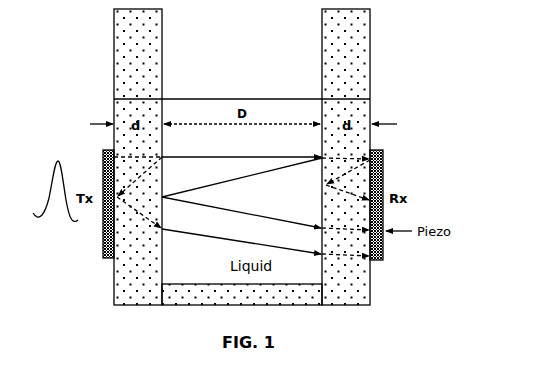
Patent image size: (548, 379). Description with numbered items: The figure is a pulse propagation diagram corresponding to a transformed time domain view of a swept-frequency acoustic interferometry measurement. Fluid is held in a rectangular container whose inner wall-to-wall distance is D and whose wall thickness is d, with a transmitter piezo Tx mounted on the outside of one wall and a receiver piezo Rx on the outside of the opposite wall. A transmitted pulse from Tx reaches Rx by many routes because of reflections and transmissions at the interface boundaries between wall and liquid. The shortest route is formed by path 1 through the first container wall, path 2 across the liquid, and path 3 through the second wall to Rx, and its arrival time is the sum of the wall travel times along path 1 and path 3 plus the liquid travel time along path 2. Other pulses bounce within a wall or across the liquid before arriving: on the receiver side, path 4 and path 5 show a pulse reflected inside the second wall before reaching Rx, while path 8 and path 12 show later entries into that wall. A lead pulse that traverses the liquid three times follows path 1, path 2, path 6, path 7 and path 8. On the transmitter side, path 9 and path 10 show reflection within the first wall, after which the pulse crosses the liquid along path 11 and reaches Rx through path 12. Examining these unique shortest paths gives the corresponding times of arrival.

The path 1 is at (138, 149).
The path 2 is at (241, 150).
The path 3 is at (345, 150).
The path 4 is at (348, 174).
The path 5 is at (347, 196).
The path 6 is at (242, 177).
The path 7 is at (241, 212).
The path 8 is at (345, 222).
The path 9 is at (140, 178).
The path 10 is at (139, 213).
The path 11 is at (241, 234).
The path 12 is at (345, 248).